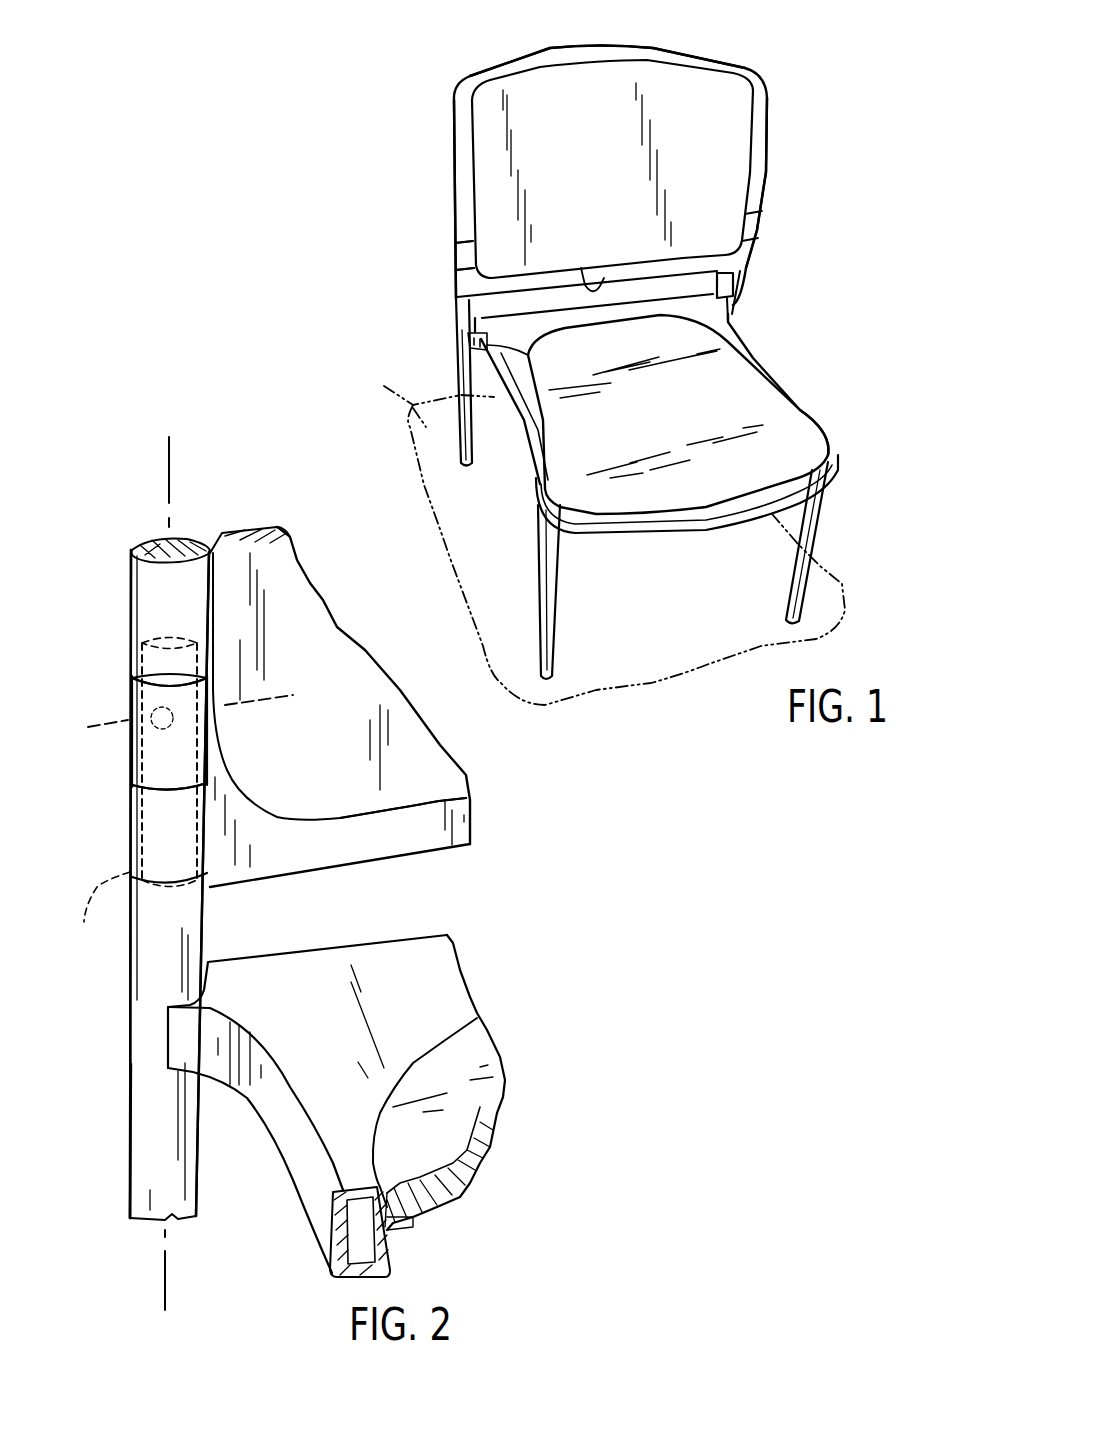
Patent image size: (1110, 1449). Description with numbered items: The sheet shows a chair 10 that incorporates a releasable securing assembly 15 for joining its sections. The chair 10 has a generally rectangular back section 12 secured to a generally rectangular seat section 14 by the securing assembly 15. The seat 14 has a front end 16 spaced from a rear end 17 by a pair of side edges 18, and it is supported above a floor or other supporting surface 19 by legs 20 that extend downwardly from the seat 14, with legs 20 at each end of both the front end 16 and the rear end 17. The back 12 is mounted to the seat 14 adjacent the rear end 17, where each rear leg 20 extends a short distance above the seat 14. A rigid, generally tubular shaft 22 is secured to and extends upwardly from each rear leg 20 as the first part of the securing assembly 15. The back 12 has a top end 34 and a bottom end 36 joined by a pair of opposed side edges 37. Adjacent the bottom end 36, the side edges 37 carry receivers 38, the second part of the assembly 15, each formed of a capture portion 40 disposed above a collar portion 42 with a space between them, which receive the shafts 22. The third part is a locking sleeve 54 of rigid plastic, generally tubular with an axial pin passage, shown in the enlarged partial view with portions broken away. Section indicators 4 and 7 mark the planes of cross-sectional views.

In FIG. 2, the section line 4- 4 is at (167, 453).
In FIG. 2, the section line 7- 7 is at (85, 727).
In FIG. 1, the chair 10 is at (400, 291).
In FIG. 1, the back section 12 is at (553, 46).
In FIG. 2, the back section 12 is at (382, 657).
In FIG. 1, the seat section 14 is at (505, 424).
In FIG. 2, the seat section 14 is at (503, 1020).
In FIG. 1, the releasable securing assembly 15 is at (455, 251).
In FIG. 2, the releasable securing assembly 15 is at (92, 787).
In FIG. 1, the front end 16 is at (704, 532).
In FIG. 1, the rear end 17 is at (685, 293).
In FIG. 2, the rear end 17 is at (323, 948).
In FIG. 1, the side edges 18 is at (772, 382).
In FIG. 2, the side edges 18 is at (301, 1200).
In FIG. 1, the floor or other supporting surface 19 is at (597, 537).
In FIG. 1, the legs 20 is at (560, 587).
In FIG. 2, the legs 20 is at (128, 1055).
In FIG. 2, the shaft 22 is at (99, 914).
In FIG. 1, the top end 34 is at (645, 48).
In FIG. 1, the bottom end 36 is at (582, 270).
In FIG. 2, the bottom end 36 is at (330, 860).
In FIG. 1, the side edges 37 is at (463, 180).
In FIG. 2, the side edges 37 is at (136, 542).
In FIG. 2, the receiver 38 is at (129, 662).
In FIG. 2, the capture portion 40 is at (148, 588).
In FIG. 2, the collar portion 42 is at (128, 805).
In FIG. 2, the locking sleeve 54 is at (126, 768).